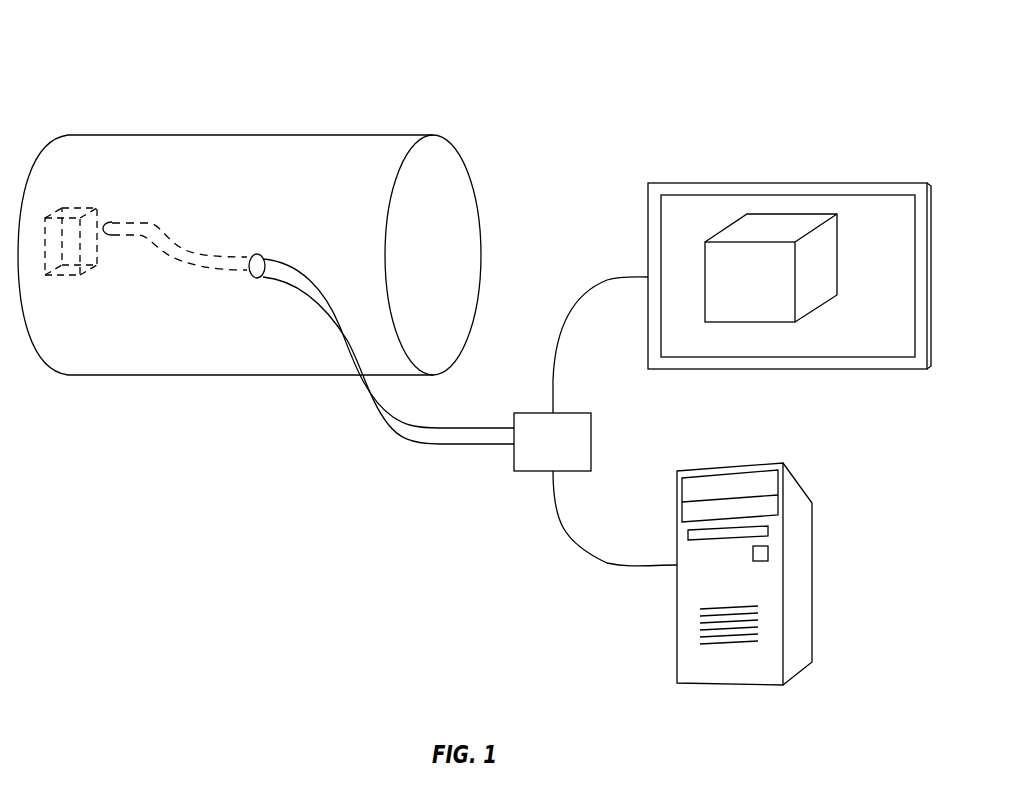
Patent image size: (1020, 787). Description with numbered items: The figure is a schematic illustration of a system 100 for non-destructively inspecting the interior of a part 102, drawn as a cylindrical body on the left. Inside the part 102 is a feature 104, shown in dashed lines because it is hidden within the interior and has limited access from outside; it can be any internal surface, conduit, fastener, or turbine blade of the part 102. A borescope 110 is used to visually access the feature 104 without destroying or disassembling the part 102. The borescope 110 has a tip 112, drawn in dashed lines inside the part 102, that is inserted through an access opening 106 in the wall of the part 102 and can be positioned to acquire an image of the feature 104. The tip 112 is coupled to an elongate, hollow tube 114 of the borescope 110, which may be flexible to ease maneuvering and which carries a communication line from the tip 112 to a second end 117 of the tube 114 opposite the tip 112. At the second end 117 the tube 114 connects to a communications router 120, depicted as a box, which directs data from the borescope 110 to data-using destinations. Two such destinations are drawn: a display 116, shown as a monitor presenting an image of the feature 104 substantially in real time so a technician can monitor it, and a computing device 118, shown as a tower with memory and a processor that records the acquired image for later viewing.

The system 100 is at (624, 64).
The part 102 is at (343, 135).
The feature 104 is at (80, 207).
The access opening 106 is at (261, 254).
The borescope 110 is at (481, 429).
The tip 112 is at (155, 230).
The tube 114 is at (400, 414).
The display 116 is at (805, 183).
The second end 117 is at (500, 446).
The computing device 118 is at (718, 463).
The communications router 120 is at (592, 440).